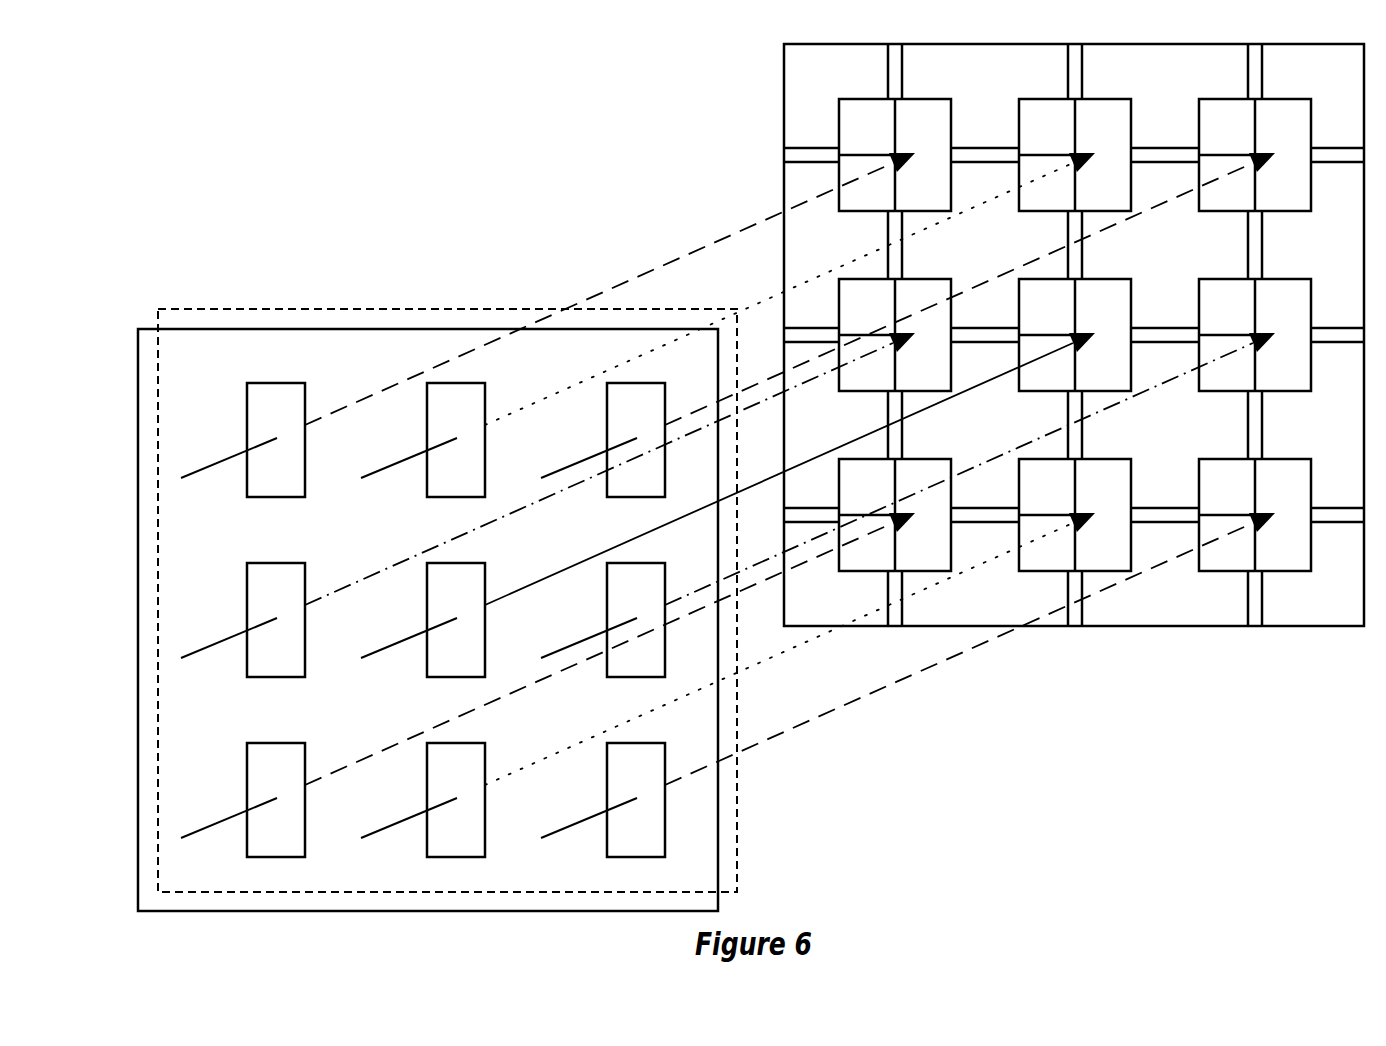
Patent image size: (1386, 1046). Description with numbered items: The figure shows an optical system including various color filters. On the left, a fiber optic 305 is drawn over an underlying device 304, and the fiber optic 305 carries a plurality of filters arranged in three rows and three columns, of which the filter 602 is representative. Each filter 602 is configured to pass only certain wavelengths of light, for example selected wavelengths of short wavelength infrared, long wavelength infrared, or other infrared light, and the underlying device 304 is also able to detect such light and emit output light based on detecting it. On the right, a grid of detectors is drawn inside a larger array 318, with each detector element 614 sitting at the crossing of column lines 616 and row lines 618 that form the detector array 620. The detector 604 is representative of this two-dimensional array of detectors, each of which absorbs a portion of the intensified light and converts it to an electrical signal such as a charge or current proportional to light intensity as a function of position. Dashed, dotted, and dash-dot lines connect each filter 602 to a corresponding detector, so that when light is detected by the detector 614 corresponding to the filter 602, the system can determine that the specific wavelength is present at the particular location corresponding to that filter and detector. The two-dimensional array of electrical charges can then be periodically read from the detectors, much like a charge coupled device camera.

The underlying device 304 is at (235, 309).
The fiber optic 305 is at (211, 383).
The filter 602 is at (262, 393).
The detector 604 is at (552, 318).
The detector 614 is at (933, 118).
The column interconnect line 616 is at (850, 125).
The row interconnect line 618 is at (844, 194).
The detector array 620 is at (1075, 327).
The detector module 318 is at (1333, 610).